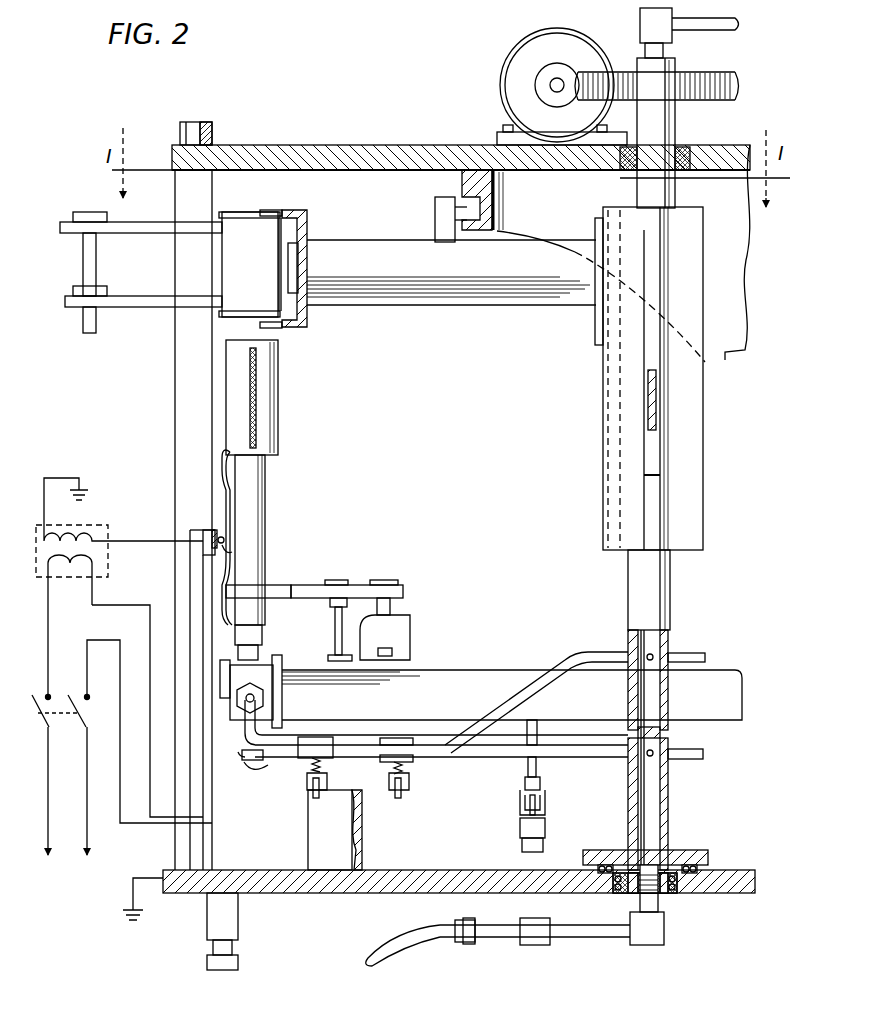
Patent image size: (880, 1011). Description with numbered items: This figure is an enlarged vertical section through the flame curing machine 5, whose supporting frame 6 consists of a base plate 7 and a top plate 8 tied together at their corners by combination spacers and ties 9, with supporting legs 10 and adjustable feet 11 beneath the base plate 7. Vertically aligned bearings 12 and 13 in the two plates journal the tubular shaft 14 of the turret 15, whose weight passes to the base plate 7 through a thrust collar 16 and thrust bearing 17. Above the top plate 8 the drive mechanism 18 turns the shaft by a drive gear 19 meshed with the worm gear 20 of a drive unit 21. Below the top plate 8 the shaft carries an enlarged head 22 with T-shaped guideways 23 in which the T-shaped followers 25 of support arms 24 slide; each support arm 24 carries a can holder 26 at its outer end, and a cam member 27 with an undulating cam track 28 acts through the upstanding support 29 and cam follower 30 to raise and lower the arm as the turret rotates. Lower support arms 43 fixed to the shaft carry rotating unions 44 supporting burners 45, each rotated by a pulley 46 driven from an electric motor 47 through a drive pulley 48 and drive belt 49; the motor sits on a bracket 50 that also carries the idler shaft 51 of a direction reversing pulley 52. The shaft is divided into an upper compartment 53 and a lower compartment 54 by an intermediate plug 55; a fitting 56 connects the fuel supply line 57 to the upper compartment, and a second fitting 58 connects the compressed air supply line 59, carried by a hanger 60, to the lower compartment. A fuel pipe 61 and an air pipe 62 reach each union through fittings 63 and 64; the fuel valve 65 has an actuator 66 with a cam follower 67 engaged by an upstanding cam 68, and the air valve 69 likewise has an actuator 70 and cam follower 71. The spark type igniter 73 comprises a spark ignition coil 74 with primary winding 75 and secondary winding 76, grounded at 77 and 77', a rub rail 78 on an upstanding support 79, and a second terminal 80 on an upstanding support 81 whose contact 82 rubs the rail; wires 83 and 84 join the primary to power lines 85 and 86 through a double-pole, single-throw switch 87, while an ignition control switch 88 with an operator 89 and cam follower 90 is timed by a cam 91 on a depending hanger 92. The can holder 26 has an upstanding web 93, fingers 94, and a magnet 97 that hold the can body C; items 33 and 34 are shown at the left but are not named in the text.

The flame curing machine 5 is at (455, 106).
The supporting frame 6 is at (268, 143).
The base plate 7 is at (308, 888).
The top plate 8 is at (380, 145).
The combination spacers and ties 9 is at (175, 368).
The supporting legs 10 is at (210, 926).
The adjustable feet 11 is at (238, 960).
The bearing 12 is at (668, 893).
The bearing 13 is at (680, 148).
The tubular shaft 14 is at (668, 618).
The turret 15 is at (713, 660).
The thrust collar 16 is at (698, 852).
The thrust bearing 17 is at (592, 868).
The drive mechanism 18 is at (742, 78).
The drive gear 19 is at (738, 102).
The worm gear 20 is at (552, 95).
The drive unit 21 is at (506, 58).
The enlarged head 22 is at (705, 414).
The T-shaped guideway 23 is at (655, 512).
The support arm 24 is at (436, 290).
The T-shaped follower 25 is at (596, 305).
The can holder 26 is at (314, 218).
The cam member 27 is at (732, 364).
The cam track 28 is at (470, 170).
The upstanding support 29 is at (435, 214).
The cam follower 30 is at (496, 214).
The bracket 33 is at (98, 328).
The arm 34 is at (144, 225).
The support arm 43 is at (496, 672).
The rotating union 44 is at (268, 642).
The burner 45 is at (290, 410).
The pulley 46 is at (264, 588).
The electric motor 47 is at (402, 622).
The drive pulley 48 is at (396, 590).
The drive belt 49 is at (316, 585).
The bracket 50 is at (412, 658).
The idler shaft 51 is at (336, 648).
The direction reversing pulley 52 is at (342, 584).
The upper compartment 53 is at (650, 690).
The lower compartment 54 is at (650, 786).
The intermediate plug 55 is at (668, 732).
The fitting 56 is at (640, 30).
The fuel supply line 57 is at (744, 28).
The second fitting 58 is at (640, 905).
The compressed air supply line 59 is at (603, 938).
The hanger 60 is at (537, 946).
The fuel pipe 61 is at (586, 652).
The air pipe 62 is at (606, 760).
The fitting 63 is at (268, 700).
The second fitting 64 is at (252, 764).
The valve 65 is at (328, 740).
The actuator 66 is at (306, 780).
The cam follower 67 is at (312, 793).
The upstanding cam 68 is at (310, 842).
The valve 69 is at (405, 740).
The actuator 70 is at (408, 774).
The cam follower 71 is at (401, 796).
The spark type igniter 73 is at (202, 524).
The spark ignition coil 74 is at (112, 520).
The primary winding 75 is at (80, 572).
The secondary winding 76 is at (72, 536).
The ground 77 is at (75, 485).
The ground 77' is at (122, 899).
The rub rail 78 is at (190, 530).
The upstanding support 79 is at (200, 845).
The second terminal 80 is at (224, 455).
The upstanding support 81 is at (234, 554).
The contact 82 is at (225, 540).
The wire 83 is at (52, 656).
The wire 84 is at (136, 605).
The power line 85 is at (48, 850).
The power line 86 is at (88, 845).
The double-pole, single-throw switch 87 is at (86, 730).
The ignition control switch 88 is at (546, 828).
The operator 89 is at (520, 808).
The cam follower 90 is at (543, 800).
The cam 91 is at (524, 784).
The depending hanger 92 is at (538, 733).
The upstanding web 93 is at (306, 316).
The fingers 94 is at (272, 210).
The magnet 97 is at (300, 270).
The can body C is at (250, 222).